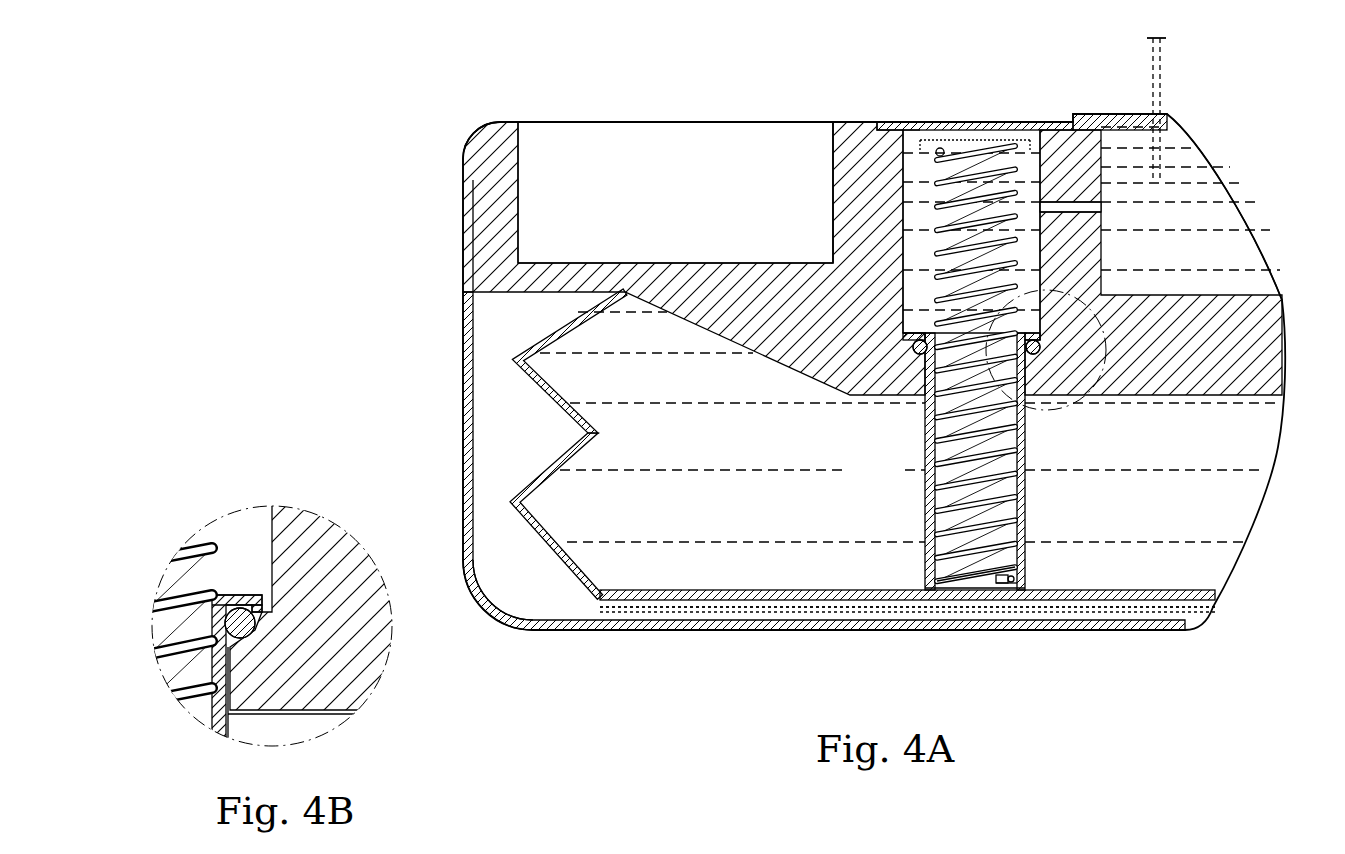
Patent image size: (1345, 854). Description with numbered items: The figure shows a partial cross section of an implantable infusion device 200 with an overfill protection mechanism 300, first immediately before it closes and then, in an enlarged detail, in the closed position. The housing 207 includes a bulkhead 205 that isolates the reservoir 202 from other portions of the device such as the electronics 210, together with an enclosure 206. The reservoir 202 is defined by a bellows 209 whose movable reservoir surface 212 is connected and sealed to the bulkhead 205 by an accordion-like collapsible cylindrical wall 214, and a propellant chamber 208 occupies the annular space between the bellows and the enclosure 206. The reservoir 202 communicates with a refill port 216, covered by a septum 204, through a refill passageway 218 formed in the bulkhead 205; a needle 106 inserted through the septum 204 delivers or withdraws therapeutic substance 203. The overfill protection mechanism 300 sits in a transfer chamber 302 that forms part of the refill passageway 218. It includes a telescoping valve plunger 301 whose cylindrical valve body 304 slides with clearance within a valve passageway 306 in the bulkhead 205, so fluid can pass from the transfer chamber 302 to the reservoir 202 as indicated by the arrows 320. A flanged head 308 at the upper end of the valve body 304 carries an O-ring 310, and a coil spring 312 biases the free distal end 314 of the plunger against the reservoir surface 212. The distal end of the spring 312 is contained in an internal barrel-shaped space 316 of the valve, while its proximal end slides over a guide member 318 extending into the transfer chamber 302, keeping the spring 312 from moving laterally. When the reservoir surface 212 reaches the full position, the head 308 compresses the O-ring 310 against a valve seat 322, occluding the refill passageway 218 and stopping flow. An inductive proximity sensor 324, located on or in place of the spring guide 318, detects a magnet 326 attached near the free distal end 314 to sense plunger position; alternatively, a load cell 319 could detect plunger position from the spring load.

In FIG. 4A, the needle 106 is at (1165, 58).
In FIG. 4A, the device 200 is at (850, 118).
In FIG. 4A, the reservoir 202 is at (672, 570).
In FIG. 4A, the therapeutic substance 203 is at (1195, 195).
In FIG. 4A, the septum 204 is at (1125, 118).
In FIG. 4A, the bulkhead 205 is at (688, 262).
In FIG. 4A, the enclosure 206 is at (468, 300).
In FIG. 4A, the housing 207 is at (485, 128).
In FIG. 4A, the propellant chamber 208 is at (520, 590).
In FIG. 4A, the bellows 209 is at (520, 505).
In FIG. 4A, the electronics 210 is at (638, 137).
In FIG. 4A, the reservoir surface 212 is at (738, 605).
In FIG. 4A, the collapsible cylindrical wall 214 is at (555, 460).
In FIG. 4A, the refill port 216 is at (1185, 148).
In FIG. 4A, the refill passageway 218 is at (1115, 207).
In FIG. 4A, the overfill protection mechanism 300 is at (1035, 548).
In FIG. 4A, the valve plunger 301 is at (947, 540).
In FIG. 4A, the transfer chamber 302 is at (910, 193).
In FIG. 4A, the valve body 304 is at (910, 470).
In FIG. 4B, the valve body 304 is at (233, 745).
In FIG. 4A, the valve passageway 306 is at (918, 358).
In FIG. 4B, the valve passageway 306 is at (255, 702).
In FIG. 4A, the head 308 is at (928, 333).
In FIG. 4B, the head 308 is at (222, 592).
In FIG. 4B, the O-ring 310 is at (300, 650).
In FIG. 4A, the coil spring 312 is at (975, 150).
In FIG. 4B, the coil spring 312 is at (165, 590).
In FIG. 4A, the free distal end 314 is at (978, 595).
In FIG. 4A, the internal barrel-shaped space 316 is at (975, 582).
In FIG. 4A, the guide member 318 is at (942, 150).
In FIG. 4A, the load cell 319 is at (910, 122).
In FIG. 4A, the arrows 320 is at (1042, 440).
In FIG. 4B, the arrows 320 is at (231, 575).
In FIG. 4A, the valve seat 322 is at (1027, 400).
In FIG. 4B, the valve seat 322 is at (263, 596).
In FIG. 4A, the inductive proximity sensor 324 is at (1032, 160).
In FIG. 4A, the magnet 326 is at (985, 584).